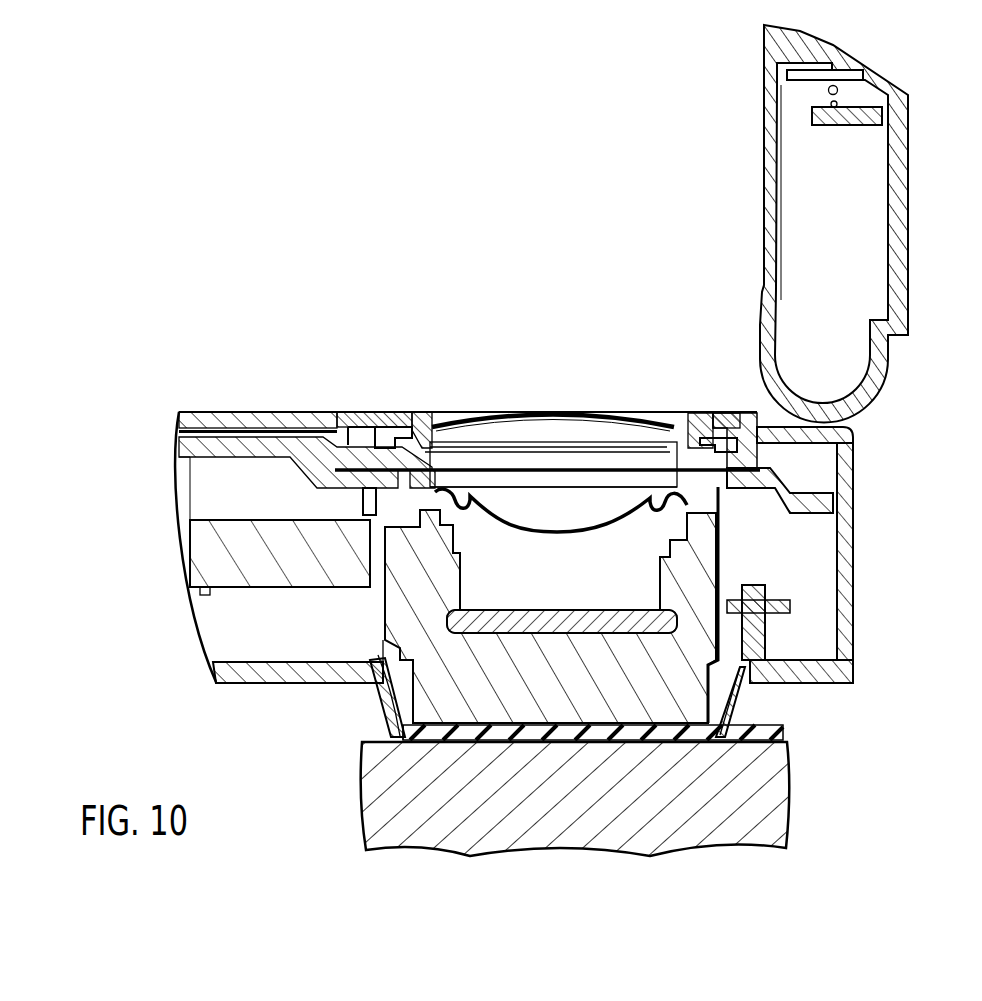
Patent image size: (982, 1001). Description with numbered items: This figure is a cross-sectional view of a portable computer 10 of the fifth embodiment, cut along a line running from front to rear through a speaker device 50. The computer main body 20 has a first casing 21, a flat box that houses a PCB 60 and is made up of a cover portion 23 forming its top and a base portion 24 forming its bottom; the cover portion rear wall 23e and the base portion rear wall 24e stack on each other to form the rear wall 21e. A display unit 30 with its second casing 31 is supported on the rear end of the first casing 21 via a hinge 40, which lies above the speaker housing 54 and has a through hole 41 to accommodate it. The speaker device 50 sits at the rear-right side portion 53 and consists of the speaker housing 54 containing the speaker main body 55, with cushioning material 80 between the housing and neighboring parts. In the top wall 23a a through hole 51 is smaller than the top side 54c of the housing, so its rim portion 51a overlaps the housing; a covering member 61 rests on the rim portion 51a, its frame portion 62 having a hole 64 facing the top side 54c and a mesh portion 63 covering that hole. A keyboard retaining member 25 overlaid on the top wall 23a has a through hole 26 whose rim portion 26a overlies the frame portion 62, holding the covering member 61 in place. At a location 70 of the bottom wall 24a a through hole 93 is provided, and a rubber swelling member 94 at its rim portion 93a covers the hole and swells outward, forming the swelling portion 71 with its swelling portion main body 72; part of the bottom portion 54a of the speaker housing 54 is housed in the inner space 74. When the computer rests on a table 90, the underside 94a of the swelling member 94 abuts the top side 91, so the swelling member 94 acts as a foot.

The portable computer 10 is at (222, 409).
The computer main body 20 is at (177, 409).
The first casing 21 is at (181, 490).
The rear wall 21e is at (846, 522).
The cover portion 23 is at (858, 453).
The top wall 23a is at (283, 411).
The cover portion rear wall 23e is at (842, 488).
The base portion 24 is at (856, 591).
The bottom wall 24a is at (248, 684).
The base portion rear wall 24e is at (855, 662).
The keyboard retaining member 25 is at (362, 409).
The through hole 26 is at (420, 440).
The rim portion 26a is at (396, 428).
The display unit 30 is at (912, 276).
The second casing 31 is at (910, 150).
The hinge 40 is at (233, 459).
The through hole 41 is at (721, 498).
The speaker device 50 is at (382, 607).
The through hole 51 is at (562, 445).
The rim portion 51a is at (445, 425).
The rear-right side portion 53 is at (305, 683).
The speaker housing 54 is at (400, 612).
The bottom portion 54a is at (735, 690).
The top side 54c is at (615, 465).
The speaker main body 55 is at (720, 562).
The PCB 60 is at (192, 546).
The covering member 61 is at (540, 409).
The frame portion 62 is at (430, 425).
The mesh portion 63 is at (600, 438).
The hole 64 is at (460, 444).
The location 70 is at (737, 726).
The swelling portion 71 is at (386, 715).
The swelling portion main body 72 is at (398, 748).
The inner space 74 is at (762, 670).
The cushioning material 80 is at (456, 503).
The table 90 is at (772, 816).
The top side 91 is at (782, 736).
The through hole 93 is at (462, 612).
The rim portion 93a is at (766, 652).
The swelling member 94 is at (555, 632).
The underside 94a is at (615, 745).